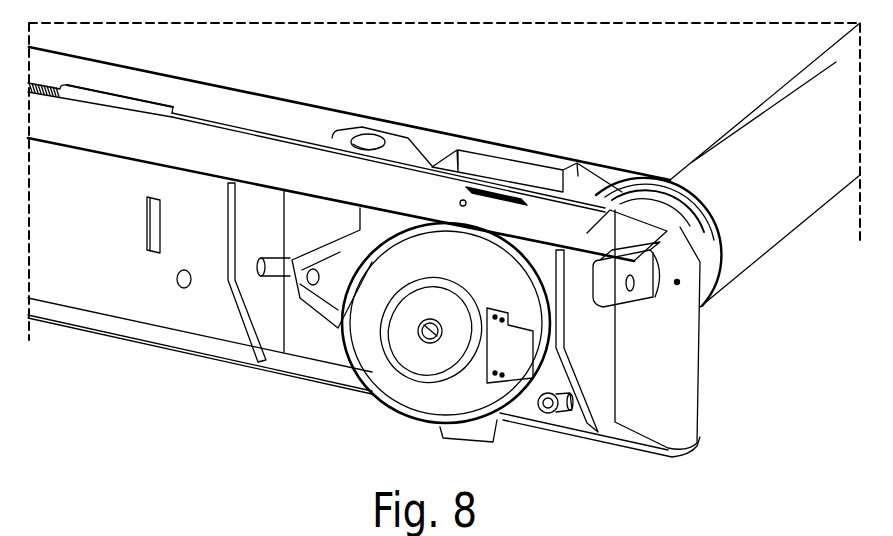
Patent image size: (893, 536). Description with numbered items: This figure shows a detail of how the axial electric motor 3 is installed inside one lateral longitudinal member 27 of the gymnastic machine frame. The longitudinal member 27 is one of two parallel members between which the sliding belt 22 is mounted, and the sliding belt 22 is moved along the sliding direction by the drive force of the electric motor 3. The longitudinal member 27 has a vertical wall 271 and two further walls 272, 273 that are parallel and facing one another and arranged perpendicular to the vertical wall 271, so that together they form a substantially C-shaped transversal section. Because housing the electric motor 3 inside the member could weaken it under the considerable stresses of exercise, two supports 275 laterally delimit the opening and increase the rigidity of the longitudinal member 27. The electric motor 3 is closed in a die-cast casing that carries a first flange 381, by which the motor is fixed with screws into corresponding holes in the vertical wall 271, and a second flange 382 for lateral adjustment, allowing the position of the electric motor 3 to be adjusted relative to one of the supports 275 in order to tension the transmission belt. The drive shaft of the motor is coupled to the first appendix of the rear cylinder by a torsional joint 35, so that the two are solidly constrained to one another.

The electric motor 3 is at (368, 405).
The sliding belt 22 is at (800, 190).
The lateral longitudinal member 27 is at (160, 308).
The torsional joint 35 is at (712, 257).
The vertical wall 271 is at (700, 333).
The wall 272 is at (680, 228).
The wall 273 is at (645, 452).
The support 275 is at (262, 312).
The first flange 381 is at (536, 395).
The second flange 382 is at (320, 305).